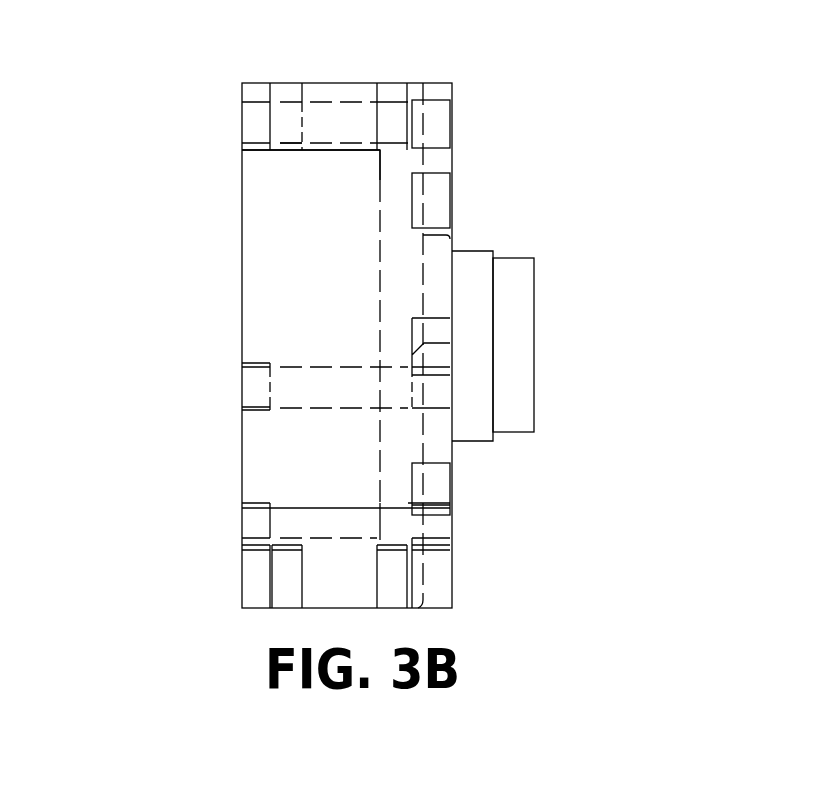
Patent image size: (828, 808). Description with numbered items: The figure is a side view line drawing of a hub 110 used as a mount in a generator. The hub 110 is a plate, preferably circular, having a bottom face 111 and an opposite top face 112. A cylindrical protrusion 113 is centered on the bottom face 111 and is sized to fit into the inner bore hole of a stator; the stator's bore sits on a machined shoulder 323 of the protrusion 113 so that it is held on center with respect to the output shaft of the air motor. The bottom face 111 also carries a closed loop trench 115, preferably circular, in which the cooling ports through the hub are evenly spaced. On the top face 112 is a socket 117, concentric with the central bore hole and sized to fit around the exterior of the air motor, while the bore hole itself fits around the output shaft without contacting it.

The hub 110 is at (507, 158).
The bottom face 111 is at (452, 92).
The top face 112 is at (242, 92).
The cylindrical protrusion 113 is at (517, 310).
The closed loop trench 115 is at (440, 481).
The socket 117 is at (268, 308).
The machined shoulder 323 is at (493, 441).